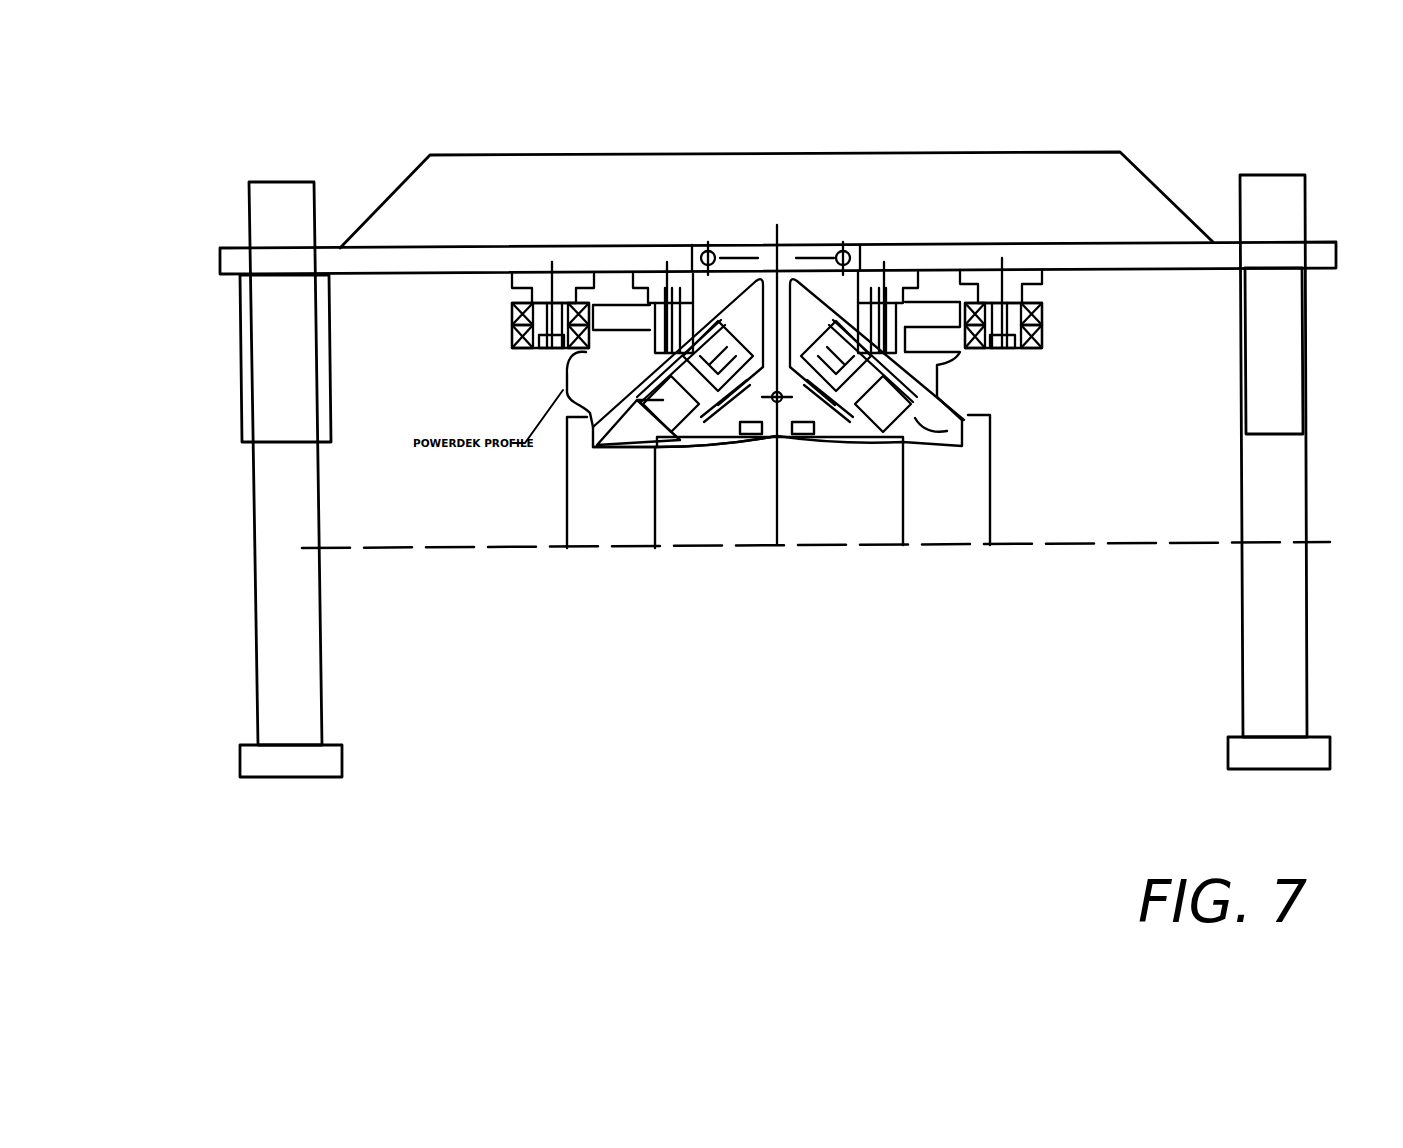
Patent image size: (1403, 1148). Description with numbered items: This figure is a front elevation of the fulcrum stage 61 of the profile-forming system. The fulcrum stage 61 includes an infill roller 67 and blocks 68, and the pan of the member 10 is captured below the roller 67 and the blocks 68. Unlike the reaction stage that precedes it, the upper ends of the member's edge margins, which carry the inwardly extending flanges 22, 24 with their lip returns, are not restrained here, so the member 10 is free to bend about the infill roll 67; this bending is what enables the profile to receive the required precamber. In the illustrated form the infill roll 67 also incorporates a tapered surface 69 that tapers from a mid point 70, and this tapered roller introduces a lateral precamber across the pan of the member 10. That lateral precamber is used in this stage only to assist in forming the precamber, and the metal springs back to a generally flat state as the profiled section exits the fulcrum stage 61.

The fulcrum stage 61 is at (1172, 140).
The flange 22 is at (630, 317).
The flange 24 is at (947, 317).
The member 10 is at (980, 390).
The blocks 68 is at (650, 402).
The tapered surface 69 is at (753, 442).
The mid point 70 is at (794, 445).
The infill roller 67 is at (923, 533).